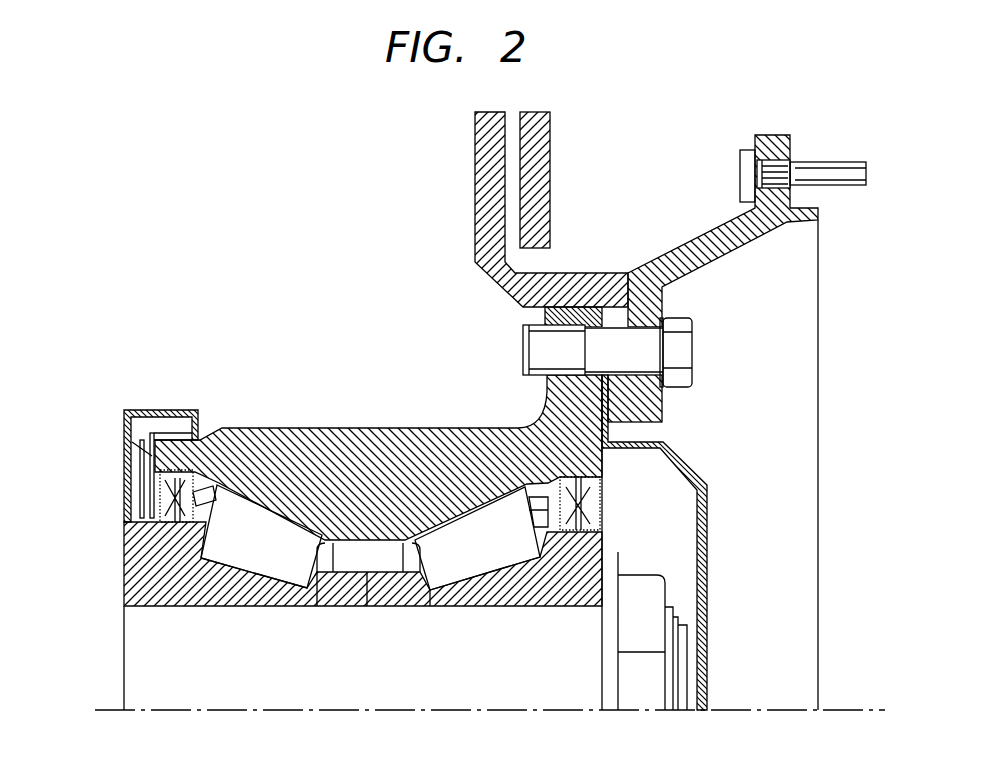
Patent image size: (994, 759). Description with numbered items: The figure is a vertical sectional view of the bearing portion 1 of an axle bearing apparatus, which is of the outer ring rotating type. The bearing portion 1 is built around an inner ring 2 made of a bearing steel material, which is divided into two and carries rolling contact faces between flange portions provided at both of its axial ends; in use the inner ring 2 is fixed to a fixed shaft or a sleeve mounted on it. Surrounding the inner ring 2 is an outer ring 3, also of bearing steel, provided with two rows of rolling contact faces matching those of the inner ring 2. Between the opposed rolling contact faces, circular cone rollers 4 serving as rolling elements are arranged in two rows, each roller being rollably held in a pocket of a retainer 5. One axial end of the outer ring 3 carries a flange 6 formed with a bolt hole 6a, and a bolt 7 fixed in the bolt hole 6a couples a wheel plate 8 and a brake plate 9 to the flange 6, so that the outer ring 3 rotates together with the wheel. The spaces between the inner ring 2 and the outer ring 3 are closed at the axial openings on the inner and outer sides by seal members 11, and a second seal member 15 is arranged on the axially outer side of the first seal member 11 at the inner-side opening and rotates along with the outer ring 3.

The bearing portion 1 is at (338, 304).
The inner ring 2 is at (218, 606).
The outer ring 3 is at (390, 427).
The circular cone rollers 4 is at (300, 570).
The retainer 5 is at (212, 496).
The flange 6 is at (545, 313).
The bolt hole 6a is at (525, 330).
The bolt 7 is at (693, 353).
The wheel plate 8 is at (727, 248).
The brake plate 9 is at (593, 287).
The seal member 11 is at (191, 465).
The second seal member 15 is at (114, 415).